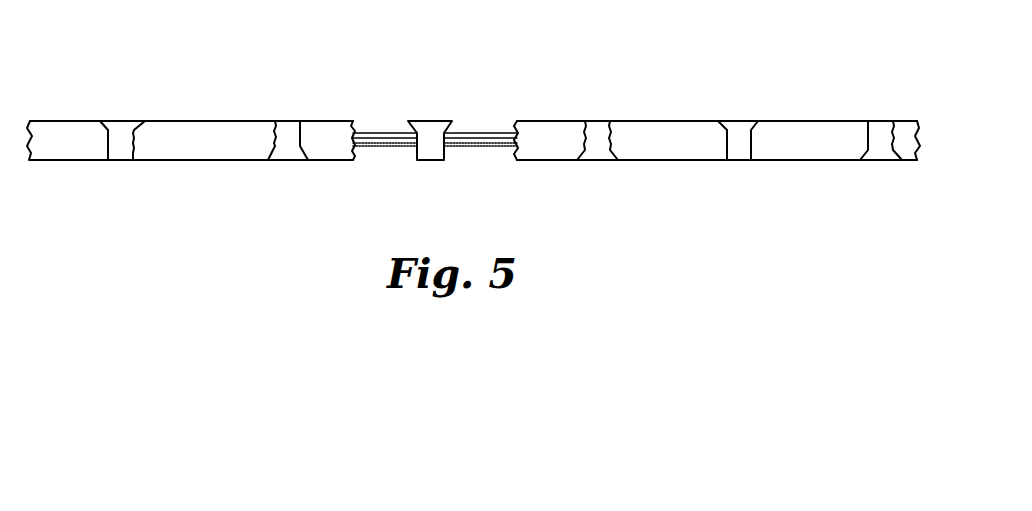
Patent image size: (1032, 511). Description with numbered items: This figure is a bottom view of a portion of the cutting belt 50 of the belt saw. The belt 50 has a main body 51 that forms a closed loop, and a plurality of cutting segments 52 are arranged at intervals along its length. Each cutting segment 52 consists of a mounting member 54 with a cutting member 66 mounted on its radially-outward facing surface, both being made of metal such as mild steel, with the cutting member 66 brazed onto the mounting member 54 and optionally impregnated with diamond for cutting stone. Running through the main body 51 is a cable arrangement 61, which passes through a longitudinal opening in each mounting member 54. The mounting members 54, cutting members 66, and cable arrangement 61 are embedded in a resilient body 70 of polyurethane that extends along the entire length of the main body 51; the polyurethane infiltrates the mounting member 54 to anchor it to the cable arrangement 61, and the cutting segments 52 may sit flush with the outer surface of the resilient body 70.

The cutting belt 50 is at (313, 104).
The main body 51 is at (267, 103).
The cutting segment 52 is at (462, 91).
The mounting member 54 is at (460, 148).
The cable arrangement 61 is at (497, 133).
The cutting member 66 is at (125, 120).
The resilient body 70 is at (203, 120).